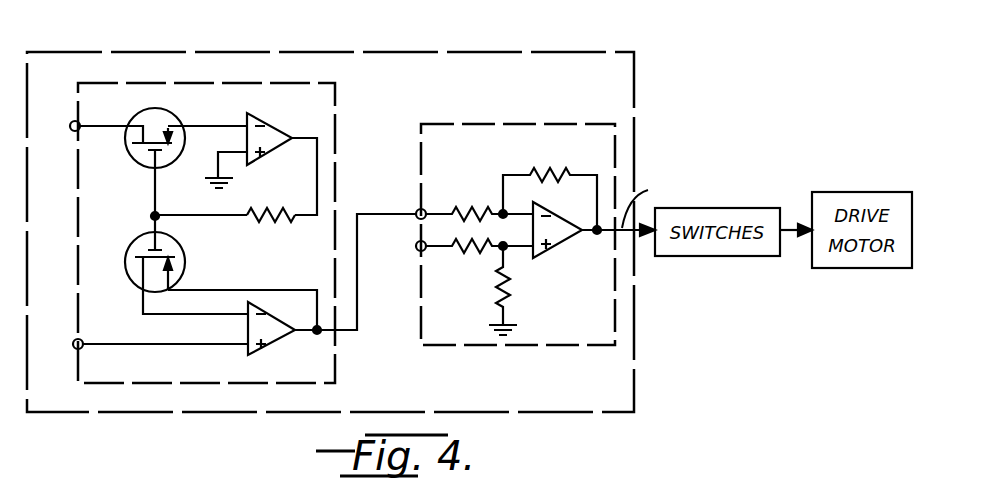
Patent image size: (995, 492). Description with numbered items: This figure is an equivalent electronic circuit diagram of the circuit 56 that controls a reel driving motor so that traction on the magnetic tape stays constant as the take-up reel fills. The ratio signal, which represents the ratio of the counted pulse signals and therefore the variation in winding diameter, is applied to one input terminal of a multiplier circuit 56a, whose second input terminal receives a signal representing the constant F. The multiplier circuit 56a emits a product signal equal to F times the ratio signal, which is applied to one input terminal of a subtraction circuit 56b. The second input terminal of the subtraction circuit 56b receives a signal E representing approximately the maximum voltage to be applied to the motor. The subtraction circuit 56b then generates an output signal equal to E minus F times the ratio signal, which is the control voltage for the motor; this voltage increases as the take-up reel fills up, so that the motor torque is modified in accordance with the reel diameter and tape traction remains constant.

The circuit 56 is at (480, 48).
The multiplier circuit 56a is at (336, 110).
The subtraction circuit 56b is at (521, 122).